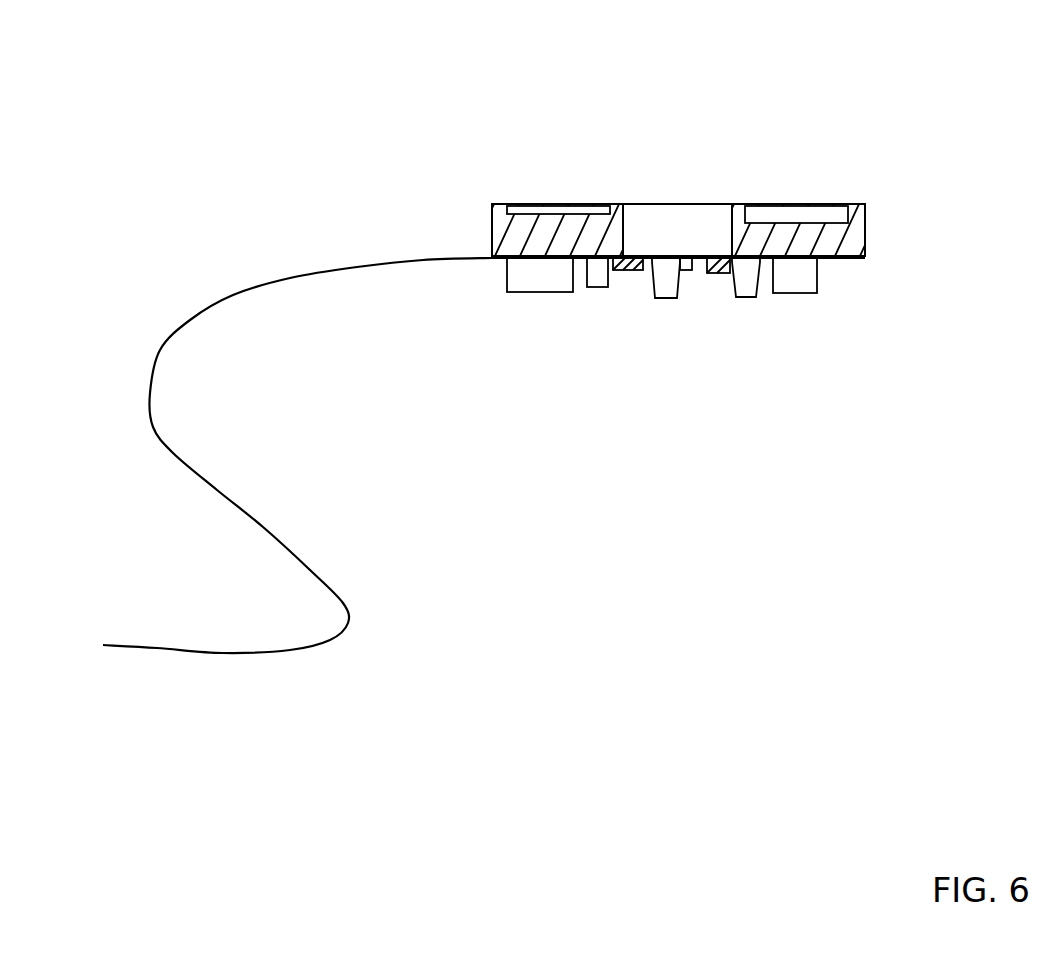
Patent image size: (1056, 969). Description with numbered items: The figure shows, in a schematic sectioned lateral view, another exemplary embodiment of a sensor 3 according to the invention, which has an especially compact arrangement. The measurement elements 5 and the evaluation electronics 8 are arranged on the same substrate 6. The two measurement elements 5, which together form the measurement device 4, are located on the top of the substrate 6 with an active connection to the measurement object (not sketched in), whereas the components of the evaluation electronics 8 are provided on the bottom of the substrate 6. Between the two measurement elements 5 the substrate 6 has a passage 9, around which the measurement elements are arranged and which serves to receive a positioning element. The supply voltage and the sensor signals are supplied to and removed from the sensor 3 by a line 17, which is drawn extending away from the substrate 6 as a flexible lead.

The sensor 3 is at (815, 119).
The measurement device 4 is at (523, 204).
The measurement element 5 is at (842, 207).
The substrate 6 is at (858, 260).
The evaluation electronics 8 is at (672, 305).
The passage 9 is at (683, 195).
The line 17 is at (235, 297).